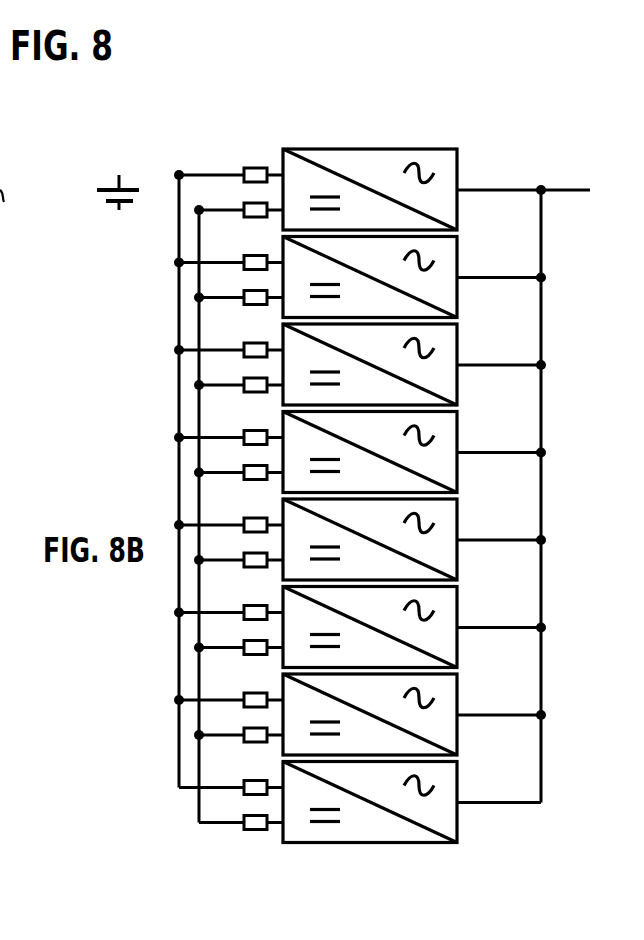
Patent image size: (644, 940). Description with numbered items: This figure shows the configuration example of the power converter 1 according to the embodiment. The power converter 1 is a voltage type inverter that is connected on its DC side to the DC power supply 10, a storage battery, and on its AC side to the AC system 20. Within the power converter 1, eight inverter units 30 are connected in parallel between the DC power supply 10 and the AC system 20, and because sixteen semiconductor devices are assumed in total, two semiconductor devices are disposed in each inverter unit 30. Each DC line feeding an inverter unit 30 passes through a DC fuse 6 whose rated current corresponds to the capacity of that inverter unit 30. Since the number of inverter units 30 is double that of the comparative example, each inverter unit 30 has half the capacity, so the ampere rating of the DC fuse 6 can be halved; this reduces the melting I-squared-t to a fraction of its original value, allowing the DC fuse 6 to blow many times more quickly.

The power converter 1 is at (391, 104).
The DC fuse 6 is at (248, 169).
The DC power supply (storage battery) 10 is at (95, 200).
The AC system 20 is at (610, 175).
The inverter unit 30 is at (457, 167).